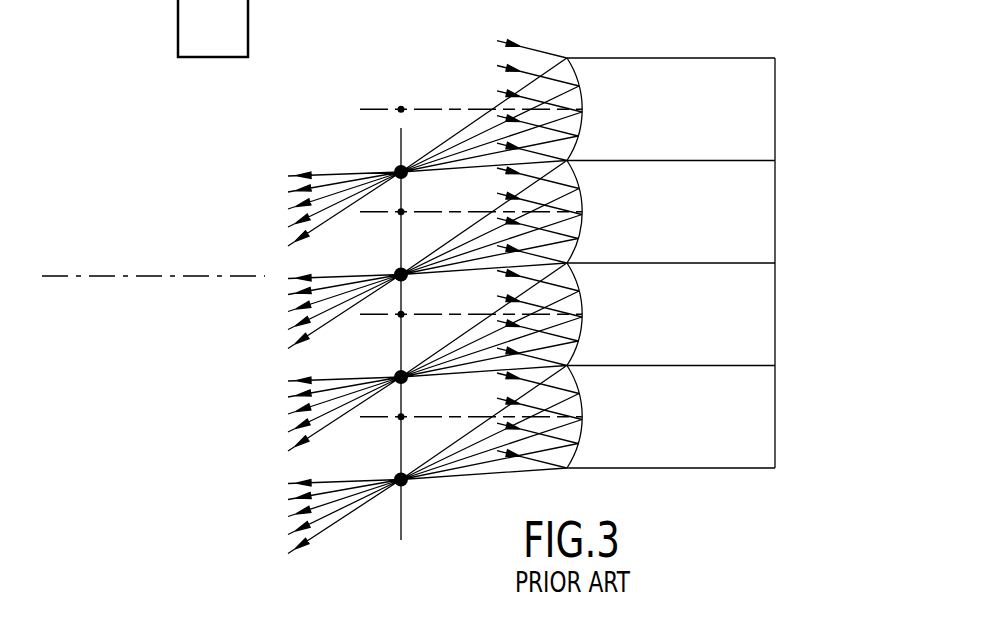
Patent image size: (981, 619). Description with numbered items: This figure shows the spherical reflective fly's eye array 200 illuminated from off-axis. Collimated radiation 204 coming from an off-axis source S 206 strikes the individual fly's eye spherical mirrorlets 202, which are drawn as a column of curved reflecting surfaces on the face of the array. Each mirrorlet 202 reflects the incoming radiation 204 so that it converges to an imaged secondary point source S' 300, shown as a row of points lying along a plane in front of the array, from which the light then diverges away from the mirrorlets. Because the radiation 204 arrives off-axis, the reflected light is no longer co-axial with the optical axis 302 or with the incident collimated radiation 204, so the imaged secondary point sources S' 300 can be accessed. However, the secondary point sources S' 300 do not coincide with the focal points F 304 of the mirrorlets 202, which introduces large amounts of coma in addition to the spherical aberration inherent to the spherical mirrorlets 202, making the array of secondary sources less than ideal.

The spherical reflective fly's eye array 200 is at (686, 234).
The fly's eye spherical mirrorlets 202 is at (665, 62).
The collimated radiation 204 is at (538, 52).
The off-axis source S 206 is at (248, 37).
The imaged secondary point sources S' 300 is at (394, 169).
The optical axis 302 is at (145, 277).
The focal points F 304 is at (400, 106).